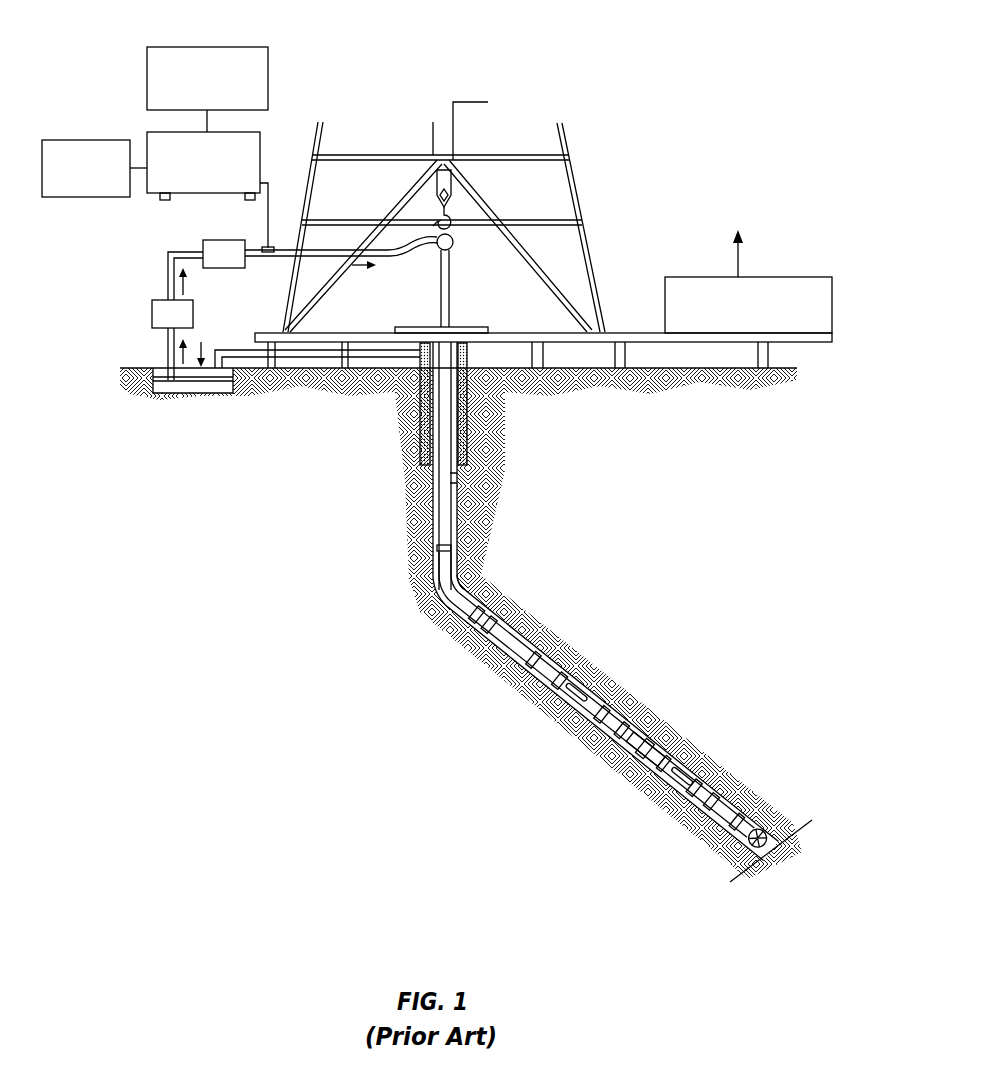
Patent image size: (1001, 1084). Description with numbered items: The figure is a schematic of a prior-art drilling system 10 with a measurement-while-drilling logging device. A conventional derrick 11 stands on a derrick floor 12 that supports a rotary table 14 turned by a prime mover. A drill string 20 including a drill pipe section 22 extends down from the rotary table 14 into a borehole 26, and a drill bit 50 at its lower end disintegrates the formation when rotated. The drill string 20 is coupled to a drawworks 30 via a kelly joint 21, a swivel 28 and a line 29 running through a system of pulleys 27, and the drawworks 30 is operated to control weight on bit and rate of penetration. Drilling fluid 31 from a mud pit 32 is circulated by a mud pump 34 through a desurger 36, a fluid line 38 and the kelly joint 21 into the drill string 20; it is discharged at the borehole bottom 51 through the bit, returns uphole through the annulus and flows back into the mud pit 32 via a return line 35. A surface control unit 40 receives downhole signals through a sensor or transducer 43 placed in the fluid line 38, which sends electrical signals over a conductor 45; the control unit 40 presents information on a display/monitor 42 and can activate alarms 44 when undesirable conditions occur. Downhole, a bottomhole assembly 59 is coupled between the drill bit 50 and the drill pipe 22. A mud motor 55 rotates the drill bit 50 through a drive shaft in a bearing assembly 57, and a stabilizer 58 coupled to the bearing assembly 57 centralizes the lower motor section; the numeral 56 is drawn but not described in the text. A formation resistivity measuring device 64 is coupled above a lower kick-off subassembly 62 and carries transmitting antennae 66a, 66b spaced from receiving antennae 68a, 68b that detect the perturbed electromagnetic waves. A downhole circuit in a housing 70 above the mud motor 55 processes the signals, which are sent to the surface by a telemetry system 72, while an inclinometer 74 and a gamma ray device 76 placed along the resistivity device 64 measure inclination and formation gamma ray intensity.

The drilling system 10 is at (626, 48).
The derrick 11 is at (588, 218).
The derrick floor 12 is at (612, 331).
The rotary table 14 is at (470, 327).
The drill string 20 is at (460, 483).
The kelly joint 21 is at (450, 283).
The drill pipe section 22 is at (437, 542).
The borehole 26 is at (462, 592).
The system of pulleys 27 is at (475, 612).
The swivel 28 is at (430, 249).
The line 29 is at (453, 146).
The drawworks 30 is at (772, 277).
The drilling fluid 31 is at (160, 393).
The mud pit 32 is at (218, 395).
The mud pump 34 is at (152, 312).
The return line 35 is at (298, 357).
The desurger 36 is at (215, 240).
The fluid line 38 is at (252, 268).
The surface control unit 40 is at (262, 132).
The display/monitor 42 is at (224, 47).
The sensor 43 is at (268, 247).
The alarms 44 is at (72, 140).
The conductor 45 is at (268, 183).
The drill bit 50 is at (772, 835).
The borehole bottom 51 is at (734, 885).
The mud motor 55 is at (542, 652).
The measurement-while-drilling tool 56 is at (565, 672).
The bearing assembly 57 is at (678, 822).
The stabilizer 58 is at (752, 812).
The downhole subassembly 59 is at (583, 607).
The lower kick-off subassembly 62 is at (725, 792).
The formation resistivity measuring device 64 is at (640, 770).
The transmitting antenna 66a is at (580, 735).
The transmitting antenna 66b is at (655, 785).
The receiving antenna 68a is at (600, 755).
The receiving antenna 68b is at (650, 740).
The housing 70 is at (455, 640).
The telemetry system 72 is at (441, 582).
The inclinometer 74 is at (668, 762).
The gamma ray device 76 is at (690, 778).